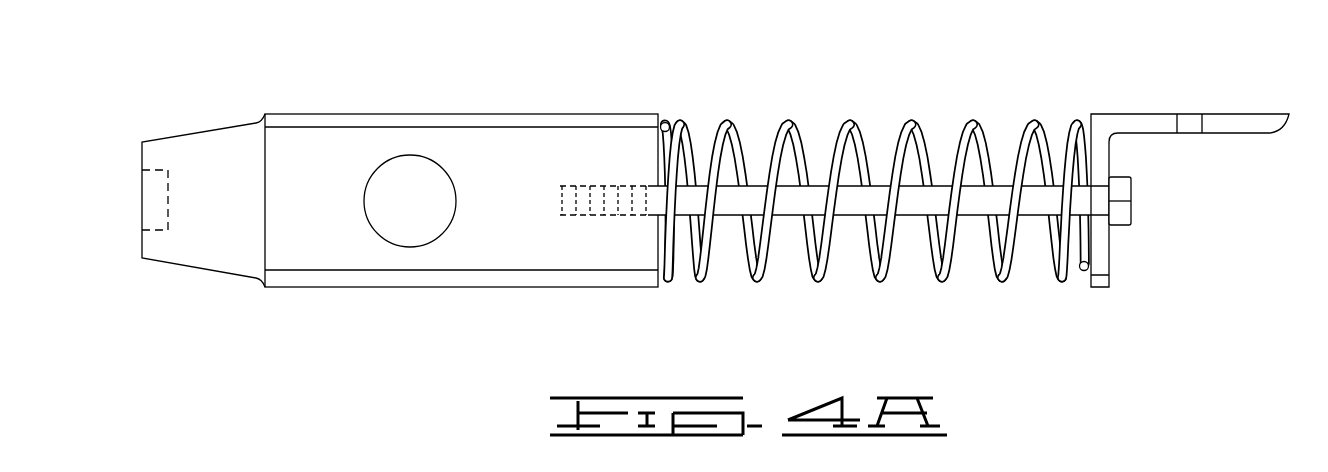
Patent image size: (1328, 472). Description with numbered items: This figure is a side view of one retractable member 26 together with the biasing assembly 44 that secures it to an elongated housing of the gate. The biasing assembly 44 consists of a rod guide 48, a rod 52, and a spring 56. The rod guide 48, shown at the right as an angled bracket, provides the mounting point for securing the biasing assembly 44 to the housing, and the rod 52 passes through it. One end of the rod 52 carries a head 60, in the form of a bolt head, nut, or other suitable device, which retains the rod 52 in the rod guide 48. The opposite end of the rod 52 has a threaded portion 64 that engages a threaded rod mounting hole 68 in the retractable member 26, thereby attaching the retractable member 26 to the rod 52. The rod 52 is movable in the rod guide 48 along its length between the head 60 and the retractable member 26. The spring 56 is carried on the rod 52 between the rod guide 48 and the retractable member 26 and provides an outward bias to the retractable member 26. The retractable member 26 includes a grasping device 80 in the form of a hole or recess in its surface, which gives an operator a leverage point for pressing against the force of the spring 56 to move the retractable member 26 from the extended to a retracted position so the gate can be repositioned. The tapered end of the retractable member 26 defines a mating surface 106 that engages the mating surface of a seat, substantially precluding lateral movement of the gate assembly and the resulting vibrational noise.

The retractable member 26 is at (425, 114).
The mating surface 106 is at (198, 130).
The grasping device 80 is at (412, 230).
The threaded portion 64 is at (565, 264).
The threaded rod mounting hole 68 is at (612, 217).
The biasing assembly 44 is at (878, 188).
The spring 56 is at (878, 198).
The rod 52 is at (912, 218).
The rod guide 48 is at (1238, 114).
The head 60 is at (1131, 201).